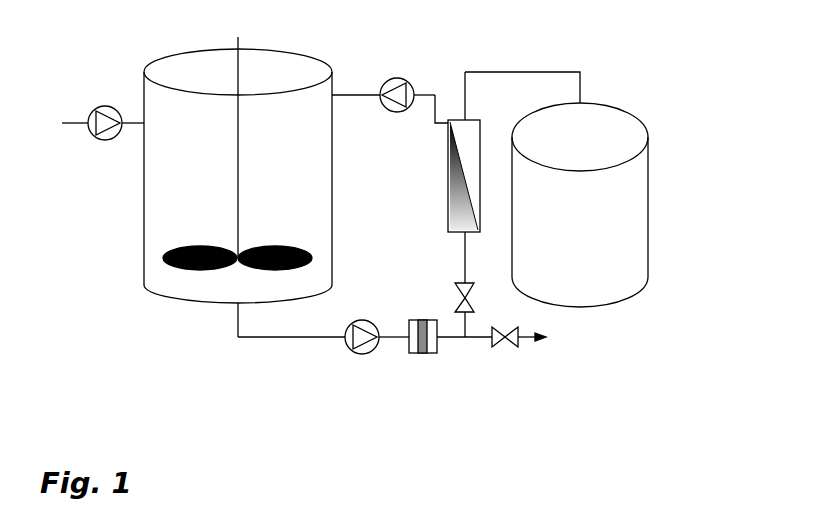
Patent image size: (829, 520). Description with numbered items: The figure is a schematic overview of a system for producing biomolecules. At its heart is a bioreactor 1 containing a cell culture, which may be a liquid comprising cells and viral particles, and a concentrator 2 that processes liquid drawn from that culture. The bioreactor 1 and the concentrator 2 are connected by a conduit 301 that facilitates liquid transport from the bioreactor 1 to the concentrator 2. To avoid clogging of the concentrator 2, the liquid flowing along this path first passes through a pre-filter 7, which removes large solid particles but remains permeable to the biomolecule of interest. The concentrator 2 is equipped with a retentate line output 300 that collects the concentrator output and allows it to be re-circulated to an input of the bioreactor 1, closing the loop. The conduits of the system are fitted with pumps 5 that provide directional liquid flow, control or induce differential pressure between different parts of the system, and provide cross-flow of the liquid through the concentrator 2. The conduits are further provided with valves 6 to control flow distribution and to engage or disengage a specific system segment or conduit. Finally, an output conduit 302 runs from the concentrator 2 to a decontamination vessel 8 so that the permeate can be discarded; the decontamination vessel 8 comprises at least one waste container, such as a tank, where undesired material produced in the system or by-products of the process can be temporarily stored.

The bioreactor 1 is at (160, 53).
The concentrator 2 is at (448, 185).
The pumps 5 is at (103, 140).
The valves 6 is at (455, 287).
The pre-filter 7 is at (425, 353).
The decontamination vessel 8 is at (650, 130).
The retentate line output 300 is at (423, 78).
The conduit 301 is at (250, 337).
The output conduit 302 is at (487, 340).